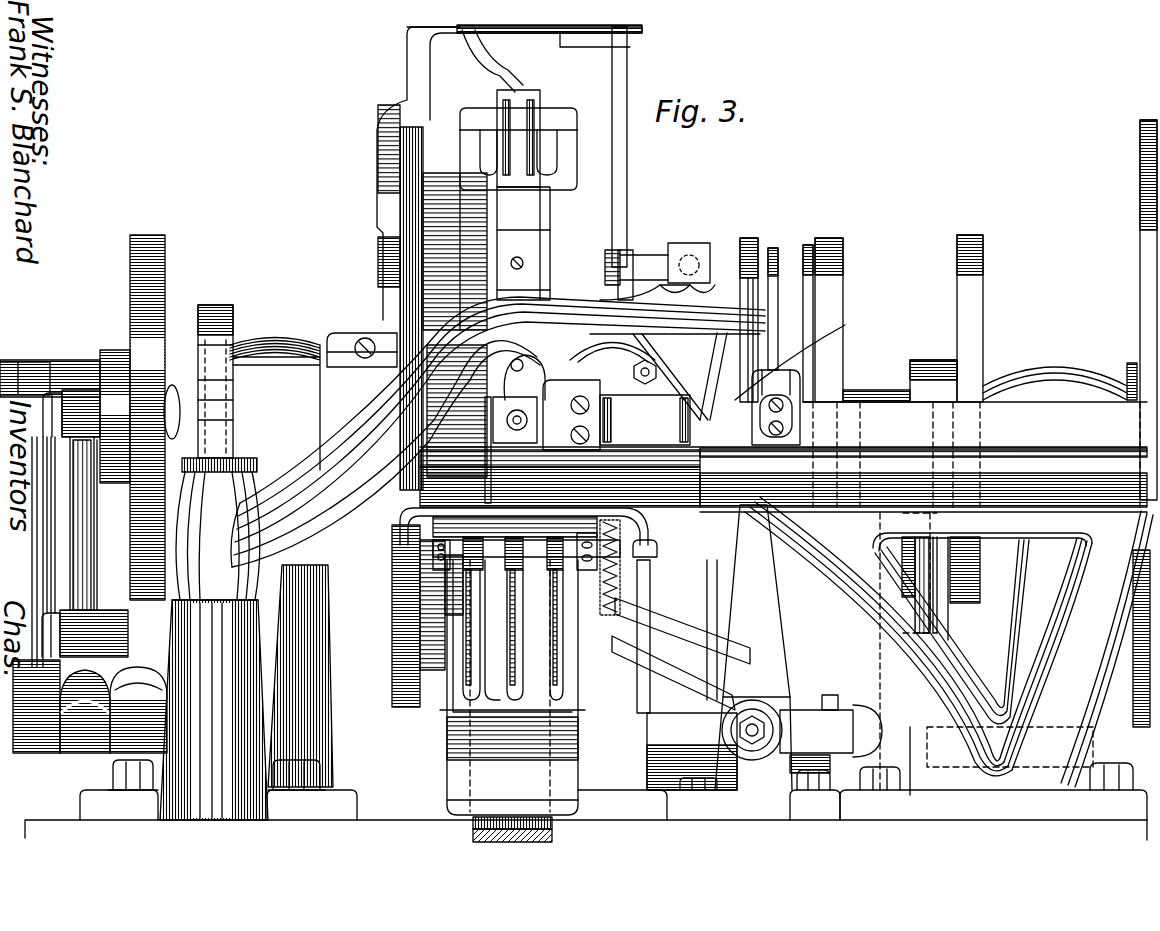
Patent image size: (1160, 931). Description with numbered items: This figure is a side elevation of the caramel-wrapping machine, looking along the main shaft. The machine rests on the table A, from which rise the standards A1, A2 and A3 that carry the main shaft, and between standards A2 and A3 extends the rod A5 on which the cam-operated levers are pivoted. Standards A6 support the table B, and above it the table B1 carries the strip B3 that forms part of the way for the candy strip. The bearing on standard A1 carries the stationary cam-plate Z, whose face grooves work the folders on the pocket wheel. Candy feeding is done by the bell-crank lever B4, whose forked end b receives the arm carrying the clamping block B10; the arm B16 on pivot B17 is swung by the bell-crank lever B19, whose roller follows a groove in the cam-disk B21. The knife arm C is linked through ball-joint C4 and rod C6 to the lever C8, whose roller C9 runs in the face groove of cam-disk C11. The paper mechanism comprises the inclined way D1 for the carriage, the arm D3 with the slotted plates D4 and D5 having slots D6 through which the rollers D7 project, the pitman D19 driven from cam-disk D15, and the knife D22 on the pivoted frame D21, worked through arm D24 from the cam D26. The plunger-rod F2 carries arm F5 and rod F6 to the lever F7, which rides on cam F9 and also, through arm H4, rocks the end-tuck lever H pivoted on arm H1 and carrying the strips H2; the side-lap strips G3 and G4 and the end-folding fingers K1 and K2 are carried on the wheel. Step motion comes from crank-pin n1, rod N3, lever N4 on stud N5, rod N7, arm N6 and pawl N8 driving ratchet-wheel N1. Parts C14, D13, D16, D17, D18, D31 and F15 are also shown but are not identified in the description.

The table A is at (412, 810).
The standard A1 is at (298, 614).
The standard A2 is at (600, 695).
The standard A3 is at (1033, 572).
The rod A5 is at (1140, 243).
The standards A6 is at (188, 690).
The table B is at (1025, 465).
The table B1 is at (990, 445).
The strip B3 is at (1010, 395).
The lever B4 is at (805, 690).
The block B10 is at (800, 405).
The arm B16 is at (916, 771).
The pivot B17 is at (830, 695).
The lever B19 is at (943, 635).
The cam-disk B21 is at (983, 238).
The forked end b is at (800, 385).
The arm C is at (445, 330).
The ball-joint C4 is at (520, 350).
The rod C6 is at (650, 292).
The lever C8 is at (800, 356).
The roller C9 is at (703, 420).
The cam-disk C11 is at (750, 238).
The block C14 is at (689, 243).
The way D1 is at (552, 822).
The arm D3 is at (398, 560).
The plate D4 is at (578, 762).
The plate D5 is at (565, 712).
The slot D6 is at (470, 690).
The rollers D7 is at (500, 568).
The brace D13 is at (890, 552).
The cam-disk D15 is at (843, 265).
The block D16 is at (917, 587).
The link D17 is at (870, 698).
The bar D18 is at (670, 650).
The pitman D19 is at (620, 580).
The frame D21 is at (640, 520).
The knife D22 is at (478, 478).
The arm D24 is at (660, 612).
The cam D26 is at (808, 245).
The bar D31 is at (452, 505).
The plunger-rod F2 is at (493, 420).
The arm F5 is at (545, 345).
The rod F6 is at (635, 355).
The lever F7 is at (700, 345).
The cam F9 is at (720, 345).
The post F15 is at (773, 248).
The strip G3 is at (555, 115).
The strip G4 is at (545, 180).
The lever H is at (480, 78).
The arm H1 is at (445, 75).
The strips H2 is at (480, 152).
The arm H4 is at (627, 182).
The folding-strip K1 is at (550, 225).
The folding-strip K2 is at (515, 250).
The ratchet-wheel N1 is at (170, 262).
The rod N3 is at (40, 487).
The lever N4 is at (68, 735).
The stud N5 is at (118, 752).
The arm N6 is at (133, 370).
The rod N7 is at (82, 598).
The pawl N8 is at (150, 395).
The crank-pin n1 is at (5, 363).
The cam-plate Z is at (390, 615).